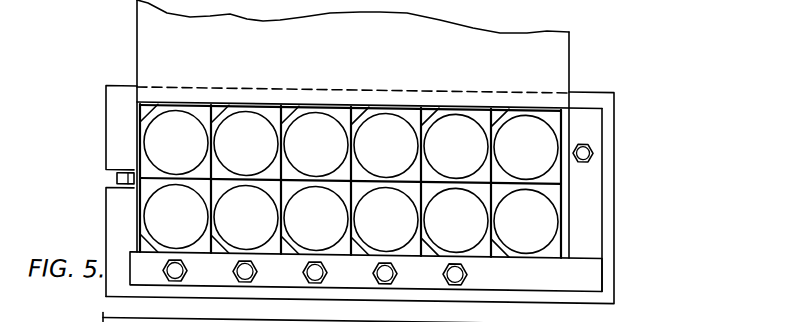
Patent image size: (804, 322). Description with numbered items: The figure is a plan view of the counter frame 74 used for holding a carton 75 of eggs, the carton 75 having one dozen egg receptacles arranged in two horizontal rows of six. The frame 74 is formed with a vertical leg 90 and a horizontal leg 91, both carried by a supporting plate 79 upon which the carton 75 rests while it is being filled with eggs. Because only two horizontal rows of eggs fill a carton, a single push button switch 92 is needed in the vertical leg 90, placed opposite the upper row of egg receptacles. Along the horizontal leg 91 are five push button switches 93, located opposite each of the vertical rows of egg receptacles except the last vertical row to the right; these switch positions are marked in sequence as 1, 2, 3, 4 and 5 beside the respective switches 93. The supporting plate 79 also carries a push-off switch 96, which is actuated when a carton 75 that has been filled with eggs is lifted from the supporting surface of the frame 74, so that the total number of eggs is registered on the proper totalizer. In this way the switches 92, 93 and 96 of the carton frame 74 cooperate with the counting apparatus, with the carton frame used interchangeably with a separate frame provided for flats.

The frame 74 is at (593, 117).
The carton 75 is at (563, 107).
The supporting plate 79 is at (112, 133).
The vertical leg 90 is at (587, 176).
The horizontal leg 91 is at (217, 275).
The push button switch 92 is at (593, 147).
The push button switches 93 is at (318, 287).
The push-off switch 96 is at (117, 179).
The first nut position 1 is at (179, 268).
The second nut position 2 is at (249, 269).
The third nut position 3 is at (319, 270).
The fourth nut position 4 is at (389, 270).
The fifth nut position 5 is at (459, 272).